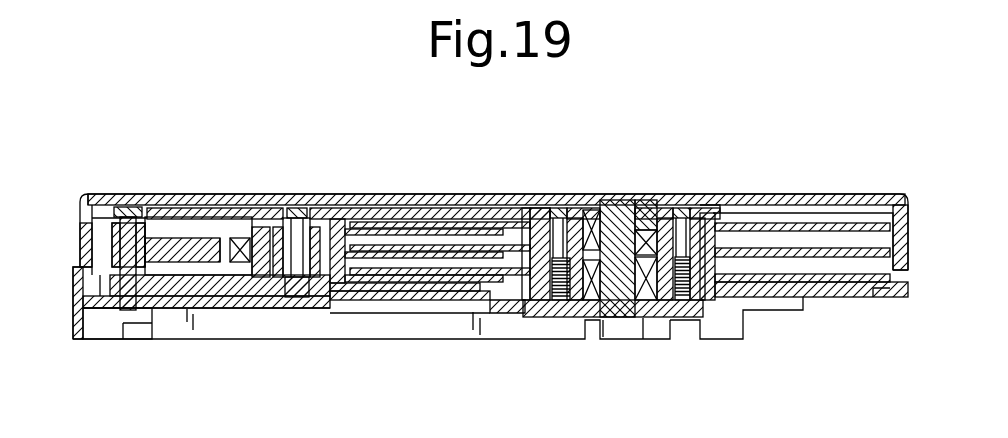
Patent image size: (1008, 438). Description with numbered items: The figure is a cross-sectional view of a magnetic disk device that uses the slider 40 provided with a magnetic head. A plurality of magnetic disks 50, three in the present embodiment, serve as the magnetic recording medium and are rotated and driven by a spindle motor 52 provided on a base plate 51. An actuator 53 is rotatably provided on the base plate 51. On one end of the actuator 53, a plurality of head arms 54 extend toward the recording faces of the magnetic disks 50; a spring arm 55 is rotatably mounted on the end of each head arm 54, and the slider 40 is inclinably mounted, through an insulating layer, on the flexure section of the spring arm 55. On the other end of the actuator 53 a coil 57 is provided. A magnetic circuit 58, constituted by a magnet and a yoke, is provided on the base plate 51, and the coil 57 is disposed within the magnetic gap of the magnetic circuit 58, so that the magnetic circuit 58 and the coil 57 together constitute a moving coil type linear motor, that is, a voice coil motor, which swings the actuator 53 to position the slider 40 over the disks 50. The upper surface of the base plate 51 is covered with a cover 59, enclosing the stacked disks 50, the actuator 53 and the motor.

The slider 40 is at (508, 208).
The magnetic disk 50 is at (828, 223).
The base plate 51 is at (404, 300).
The spindle motor 52 is at (736, 213).
The actuator 53 is at (367, 302).
The head arm 54 is at (417, 243).
The spring arm 55 is at (478, 222).
The coil 57 is at (183, 243).
The magnetic circuit 58 is at (166, 178).
The cover 59 is at (323, 197).